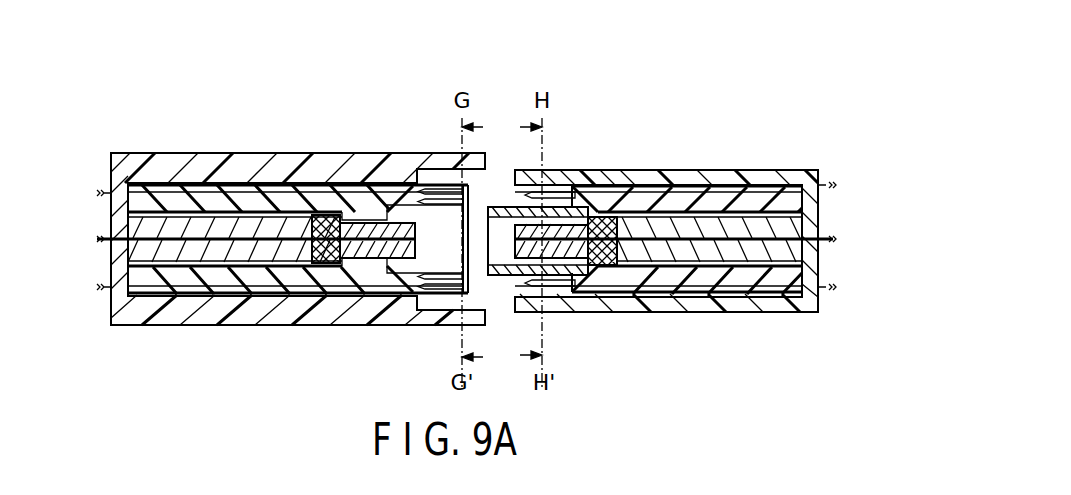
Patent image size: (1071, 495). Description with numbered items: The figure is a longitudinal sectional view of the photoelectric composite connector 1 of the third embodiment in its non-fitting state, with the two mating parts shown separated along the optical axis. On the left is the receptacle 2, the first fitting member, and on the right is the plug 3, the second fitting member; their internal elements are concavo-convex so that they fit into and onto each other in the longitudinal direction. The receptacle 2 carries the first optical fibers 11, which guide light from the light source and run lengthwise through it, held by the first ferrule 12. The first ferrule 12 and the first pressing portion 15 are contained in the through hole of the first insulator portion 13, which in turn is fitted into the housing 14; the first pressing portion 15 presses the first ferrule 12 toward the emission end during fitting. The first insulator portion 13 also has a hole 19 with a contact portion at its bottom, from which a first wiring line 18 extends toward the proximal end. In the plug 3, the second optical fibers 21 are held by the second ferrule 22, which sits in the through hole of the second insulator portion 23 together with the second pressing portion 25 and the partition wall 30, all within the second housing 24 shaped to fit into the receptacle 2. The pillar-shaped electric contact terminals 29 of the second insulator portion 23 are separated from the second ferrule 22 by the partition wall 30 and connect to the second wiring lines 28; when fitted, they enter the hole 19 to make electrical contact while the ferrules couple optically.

The photoelectric composite connector 1 is at (491, 84).
The receptacle 2 is at (322, 105).
The plug 3 is at (651, 105).
The first optical fibers 11 is at (131, 245).
The first ferrule 12 is at (348, 215).
The first insulator portion 13 is at (292, 183).
The housing 14 is at (234, 178).
The first pressing portion 15 is at (178, 230).
The first wiring line 18 is at (392, 186).
The hole 19 is at (445, 190).
The second optical fibers 21 is at (812, 300).
The second ferrule 22 is at (622, 232).
The second insulator portion 23 is at (603, 184).
The second housing 24 is at (682, 178).
The second pressing portion 25 is at (724, 230).
The second wiring lines 28 is at (772, 183).
The electric contact terminals 29 is at (562, 195).
The partition wall 30 is at (507, 205).